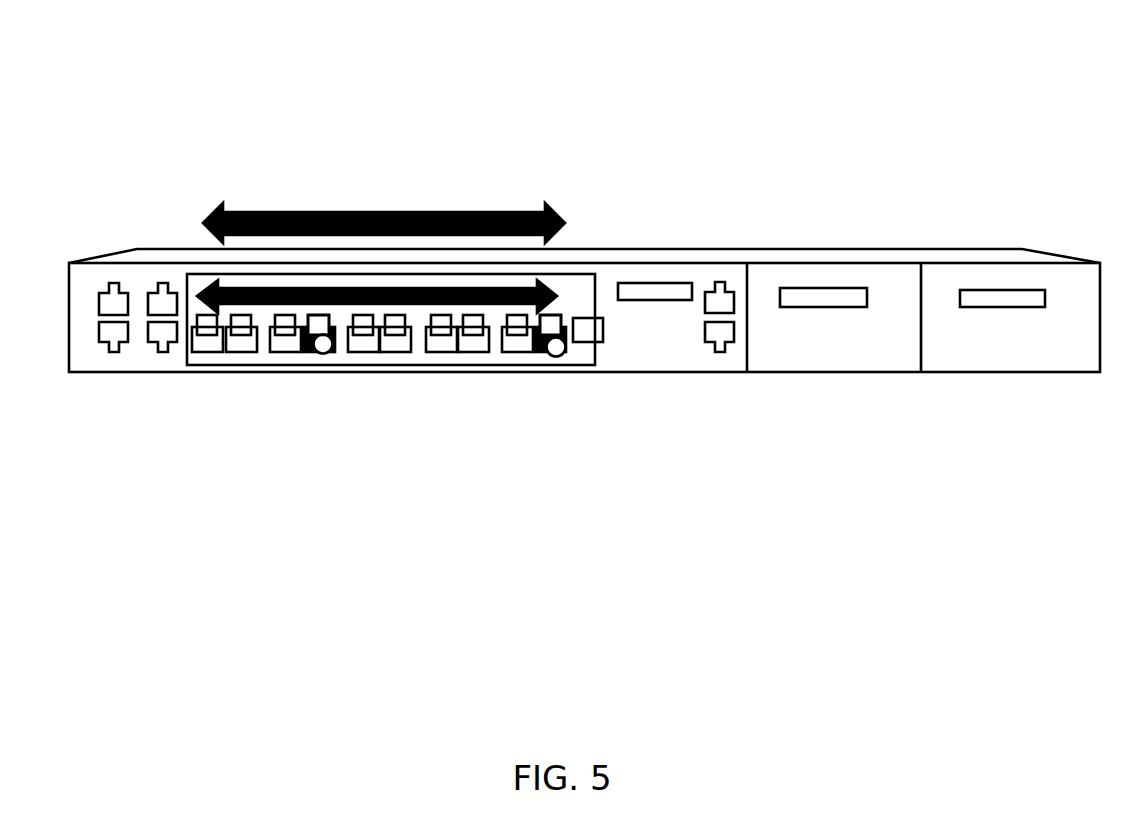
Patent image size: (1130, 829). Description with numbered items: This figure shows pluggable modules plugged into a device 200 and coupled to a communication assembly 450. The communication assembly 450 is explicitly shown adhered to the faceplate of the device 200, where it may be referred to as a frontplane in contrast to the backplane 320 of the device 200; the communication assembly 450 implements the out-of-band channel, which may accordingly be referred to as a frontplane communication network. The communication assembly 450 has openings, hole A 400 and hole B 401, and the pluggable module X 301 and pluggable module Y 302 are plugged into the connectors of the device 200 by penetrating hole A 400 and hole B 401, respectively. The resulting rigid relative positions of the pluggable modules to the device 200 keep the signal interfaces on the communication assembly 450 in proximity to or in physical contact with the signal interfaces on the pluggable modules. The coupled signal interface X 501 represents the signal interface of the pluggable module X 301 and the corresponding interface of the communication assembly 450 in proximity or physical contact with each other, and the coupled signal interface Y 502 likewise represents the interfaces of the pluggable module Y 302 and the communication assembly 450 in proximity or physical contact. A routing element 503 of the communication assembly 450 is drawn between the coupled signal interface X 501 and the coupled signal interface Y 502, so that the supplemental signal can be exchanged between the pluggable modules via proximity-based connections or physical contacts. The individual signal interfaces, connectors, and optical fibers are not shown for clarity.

The device 200 is at (733, 236).
The communication assembly 450 is at (217, 374).
The backplane 320 is at (513, 203).
The routing element 503 is at (555, 291).
The coupled signal interface X 501 is at (548, 314).
The coupled signal interface Y 502 is at (318, 314).
The pluggable module X 301 is at (542, 354).
The pluggable module Y 302 is at (307, 354).
The hole A 400 is at (563, 357).
The hole B 401 is at (326, 355).